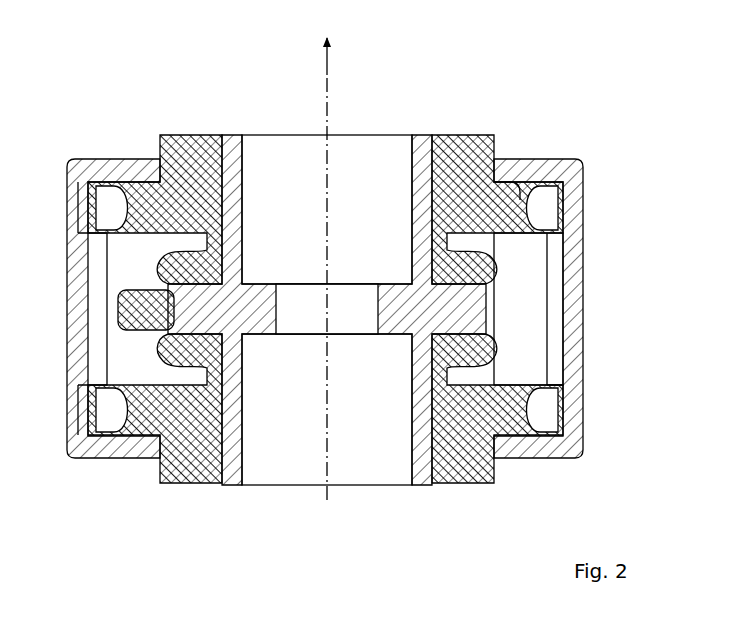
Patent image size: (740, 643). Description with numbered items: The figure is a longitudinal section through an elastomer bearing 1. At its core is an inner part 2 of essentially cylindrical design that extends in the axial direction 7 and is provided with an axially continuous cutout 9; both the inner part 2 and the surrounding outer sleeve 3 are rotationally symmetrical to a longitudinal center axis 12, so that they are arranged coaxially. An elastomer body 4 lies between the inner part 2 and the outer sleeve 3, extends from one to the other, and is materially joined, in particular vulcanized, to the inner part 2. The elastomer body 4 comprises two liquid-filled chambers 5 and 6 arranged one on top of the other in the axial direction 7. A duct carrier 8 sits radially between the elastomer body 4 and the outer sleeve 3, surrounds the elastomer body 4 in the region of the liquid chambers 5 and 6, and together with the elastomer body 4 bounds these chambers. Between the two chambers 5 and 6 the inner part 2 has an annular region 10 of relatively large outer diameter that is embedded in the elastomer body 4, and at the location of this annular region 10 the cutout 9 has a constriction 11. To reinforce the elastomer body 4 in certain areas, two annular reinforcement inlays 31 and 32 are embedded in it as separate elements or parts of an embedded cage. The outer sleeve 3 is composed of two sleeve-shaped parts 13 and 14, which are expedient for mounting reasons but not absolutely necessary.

The elastomer bearing 1 is at (120, 70).
The inner part 2 is at (240, 135).
The outer sleeve 3 is at (590, 378).
The elastomer body 4 is at (452, 135).
The liquid chamber 5 is at (155, 365).
The liquid chamber 6 is at (155, 252).
The axial direction 7 is at (328, 57).
The duct carrier 8 is at (540, 267).
The cutout 9 is at (278, 475).
The annular region 10 is at (125, 300).
The constriction 11 is at (353, 327).
The longitudinal center axis 12 is at (340, 465).
The sleeve-shaped part 13 is at (580, 405).
The sleeve-shaped part 14 is at (578, 192).
The annular reinforcement inlay 31 is at (475, 478).
The annular reinforcement inlay 32 is at (482, 132).